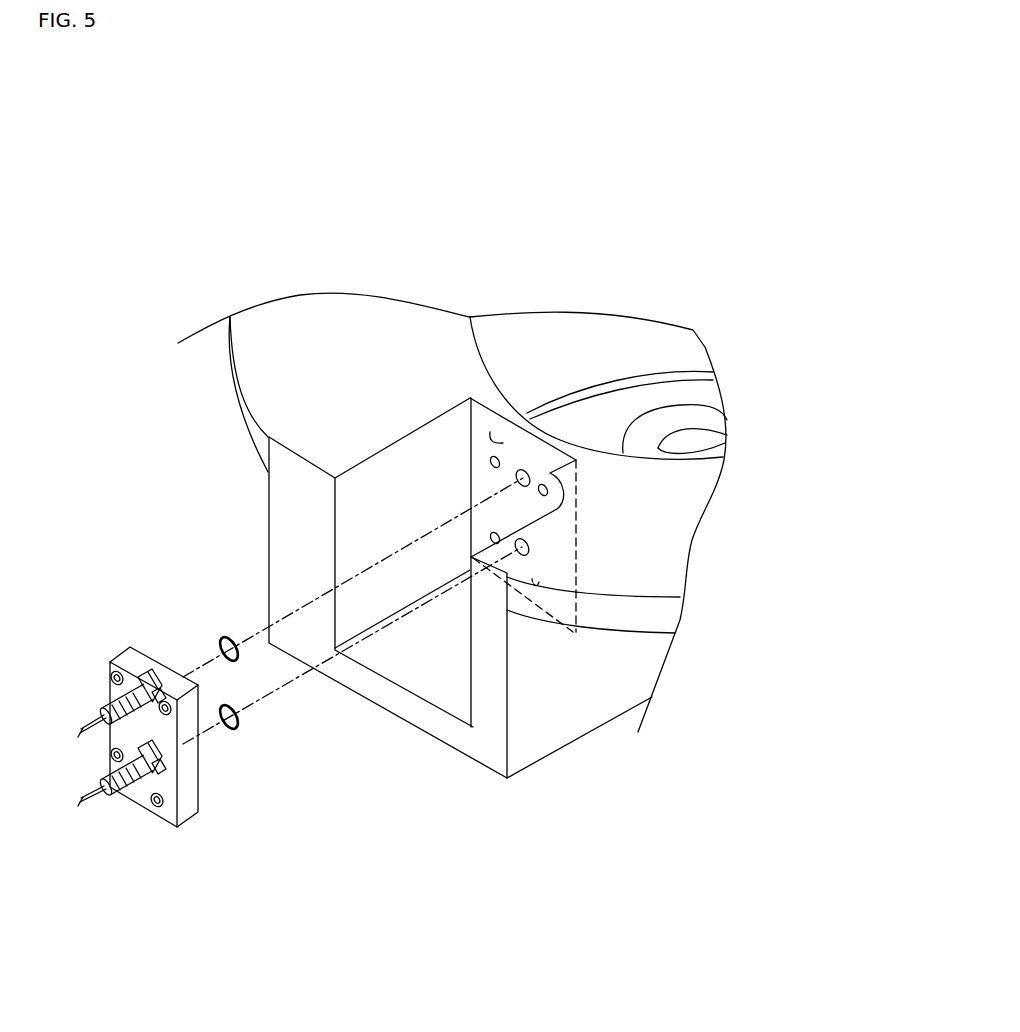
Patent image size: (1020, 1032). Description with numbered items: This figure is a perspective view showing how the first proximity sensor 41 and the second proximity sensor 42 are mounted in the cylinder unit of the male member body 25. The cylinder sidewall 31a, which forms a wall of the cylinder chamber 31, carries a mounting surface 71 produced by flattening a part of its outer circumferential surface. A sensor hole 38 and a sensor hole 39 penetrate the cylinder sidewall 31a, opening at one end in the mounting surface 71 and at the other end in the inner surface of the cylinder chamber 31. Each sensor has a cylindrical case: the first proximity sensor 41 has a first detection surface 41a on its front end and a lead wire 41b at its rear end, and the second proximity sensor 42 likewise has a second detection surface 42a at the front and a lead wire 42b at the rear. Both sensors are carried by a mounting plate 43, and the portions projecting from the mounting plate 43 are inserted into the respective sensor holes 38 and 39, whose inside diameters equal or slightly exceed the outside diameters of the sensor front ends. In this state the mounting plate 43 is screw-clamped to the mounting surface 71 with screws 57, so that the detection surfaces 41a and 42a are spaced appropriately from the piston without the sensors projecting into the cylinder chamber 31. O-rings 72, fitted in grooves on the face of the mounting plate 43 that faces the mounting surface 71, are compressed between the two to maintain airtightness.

The male member body 25 is at (543, 771).
The cylinder chamber 31 is at (508, 333).
The cylinder sidewall 31a is at (492, 397).
The sensor hole 38 is at (533, 558).
The sensor hole 39 is at (492, 443).
The first proximity sensor 41 is at (113, 797).
The first detection surface 41a is at (187, 747).
The lead wire 41b is at (97, 800).
The second proximity sensor 42 is at (103, 701).
The second detection surface 42a is at (183, 680).
The lead wire 42b is at (93, 727).
The mounting plate 43 is at (193, 818).
The screws 57 is at (114, 665).
The mounting surface 71 is at (518, 472).
The O-rings 72 is at (222, 636).